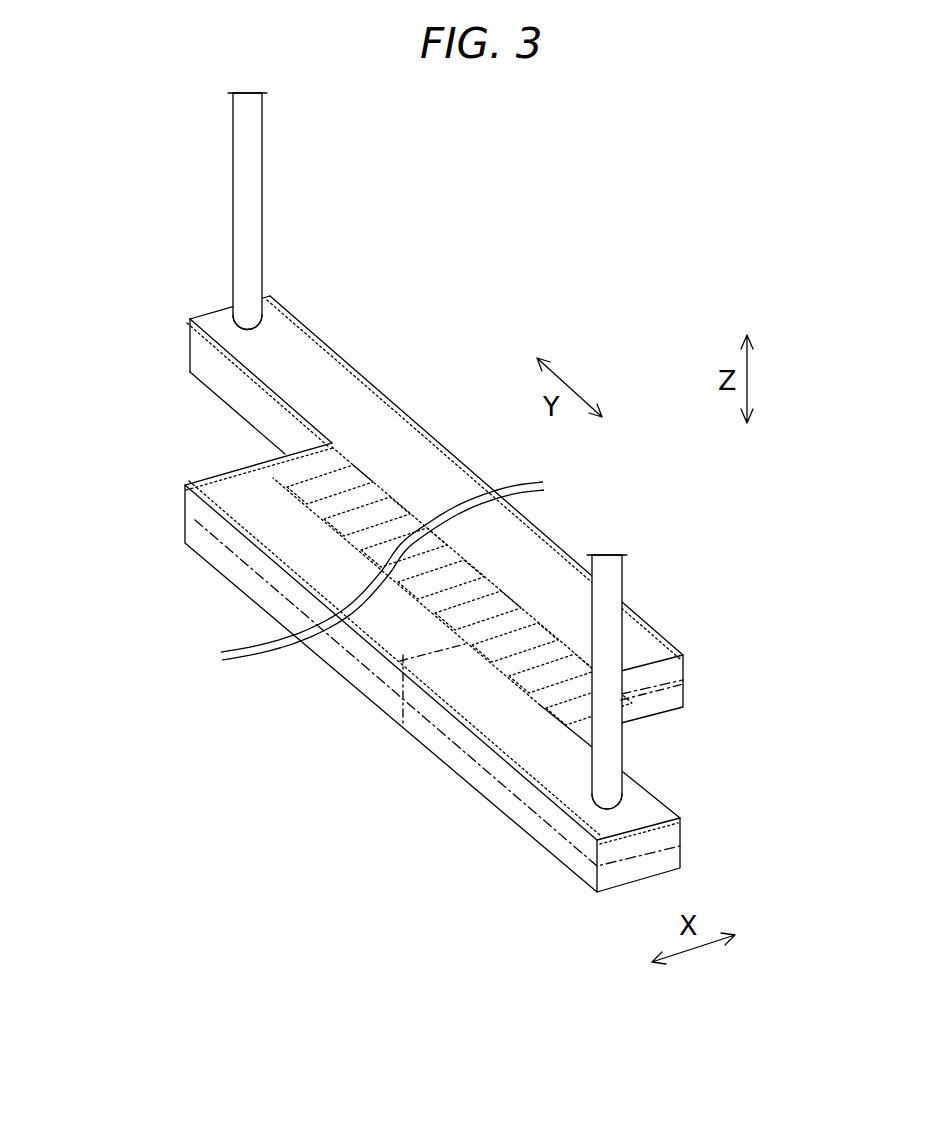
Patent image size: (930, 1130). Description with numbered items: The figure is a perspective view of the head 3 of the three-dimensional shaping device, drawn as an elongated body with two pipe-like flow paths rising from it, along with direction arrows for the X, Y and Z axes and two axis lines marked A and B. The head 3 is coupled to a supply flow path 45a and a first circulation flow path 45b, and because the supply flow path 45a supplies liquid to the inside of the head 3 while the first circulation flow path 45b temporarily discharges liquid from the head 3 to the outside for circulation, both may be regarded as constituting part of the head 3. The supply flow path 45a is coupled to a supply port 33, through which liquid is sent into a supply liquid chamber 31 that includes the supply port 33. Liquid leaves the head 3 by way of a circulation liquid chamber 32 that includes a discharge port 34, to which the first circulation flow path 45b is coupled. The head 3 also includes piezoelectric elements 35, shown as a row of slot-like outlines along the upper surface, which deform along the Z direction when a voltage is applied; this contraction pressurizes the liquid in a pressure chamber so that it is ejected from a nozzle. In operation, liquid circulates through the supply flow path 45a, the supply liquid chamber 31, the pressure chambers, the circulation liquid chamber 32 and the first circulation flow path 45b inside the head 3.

The head 3 is at (588, 255).
The supply liquid chamber 31 is at (329, 382).
The circulation liquid chamber 32 is at (483, 728).
The supply port 33 is at (240, 327).
The discharge port 34 is at (624, 792).
The piezoelectric elements 35 is at (310, 464).
The supply flow path 45a is at (253, 135).
The first circulation flow path 45b is at (604, 610).
The axis A is at (634, 690).
The axis B is at (398, 665).